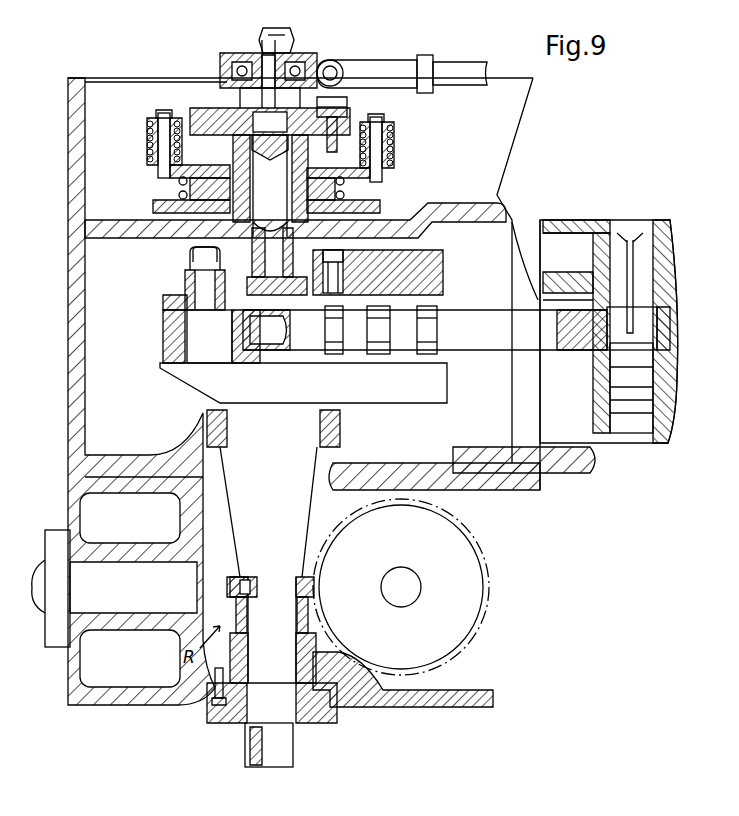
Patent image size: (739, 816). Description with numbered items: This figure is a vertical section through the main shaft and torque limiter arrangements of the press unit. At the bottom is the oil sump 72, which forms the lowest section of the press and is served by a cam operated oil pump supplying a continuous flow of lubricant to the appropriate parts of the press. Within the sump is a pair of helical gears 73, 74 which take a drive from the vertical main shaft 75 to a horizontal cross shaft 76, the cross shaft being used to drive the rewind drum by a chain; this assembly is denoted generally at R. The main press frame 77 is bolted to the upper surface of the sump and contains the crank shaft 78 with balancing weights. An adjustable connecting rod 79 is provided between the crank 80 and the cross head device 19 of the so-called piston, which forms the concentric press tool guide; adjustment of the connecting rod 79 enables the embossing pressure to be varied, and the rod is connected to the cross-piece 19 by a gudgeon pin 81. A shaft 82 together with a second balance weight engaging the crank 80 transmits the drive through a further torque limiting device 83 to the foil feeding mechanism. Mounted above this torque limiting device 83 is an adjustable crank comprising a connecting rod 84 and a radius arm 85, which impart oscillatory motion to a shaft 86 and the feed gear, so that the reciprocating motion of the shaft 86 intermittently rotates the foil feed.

The cross head device 19 is at (662, 220).
The oil sump 72 is at (508, 659).
The helical gear 73 is at (245, 578).
The helical gear 74 is at (348, 523).
The vertical main shaft 75 is at (280, 522).
The horizontal cross shaft 76 is at (413, 596).
The main press frame 77 is at (78, 413).
The crank shaft 78 is at (205, 278).
The adjustable connecting rod 79 is at (413, 340).
The crank 80 is at (404, 392).
The gudgeon pin 81 is at (638, 402).
The shaft 82 is at (279, 202).
The torque limiting device 83 is at (400, 169).
The connecting rod 84 is at (313, 60).
The radius arm 85 is at (372, 65).
The shaft 86 is at (449, 63).